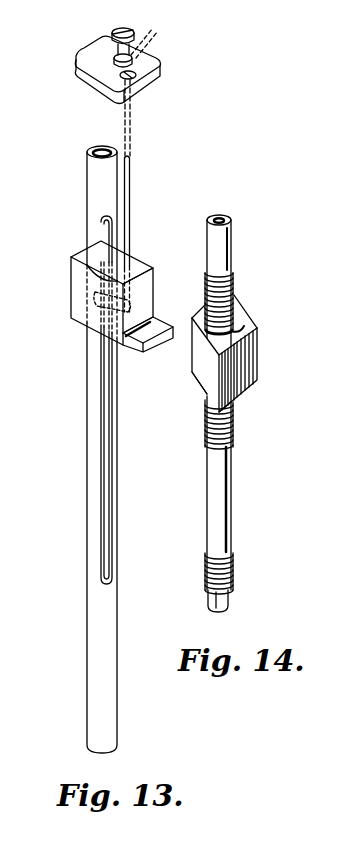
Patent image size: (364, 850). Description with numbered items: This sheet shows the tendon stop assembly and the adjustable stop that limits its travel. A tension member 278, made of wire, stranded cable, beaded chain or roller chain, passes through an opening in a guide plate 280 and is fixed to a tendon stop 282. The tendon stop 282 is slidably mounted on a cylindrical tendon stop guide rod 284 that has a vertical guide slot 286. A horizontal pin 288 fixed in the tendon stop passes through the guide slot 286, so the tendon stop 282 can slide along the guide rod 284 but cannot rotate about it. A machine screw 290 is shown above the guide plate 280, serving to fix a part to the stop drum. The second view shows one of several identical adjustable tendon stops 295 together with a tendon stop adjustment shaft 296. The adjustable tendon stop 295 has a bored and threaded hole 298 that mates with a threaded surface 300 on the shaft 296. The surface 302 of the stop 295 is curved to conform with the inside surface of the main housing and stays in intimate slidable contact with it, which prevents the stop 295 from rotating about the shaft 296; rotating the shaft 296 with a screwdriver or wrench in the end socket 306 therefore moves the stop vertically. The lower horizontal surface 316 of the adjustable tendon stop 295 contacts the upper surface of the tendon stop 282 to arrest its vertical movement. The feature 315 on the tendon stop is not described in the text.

In FIG. 13, the tension member 278 is at (132, 184).
In FIG. 13, the guide plate 280 is at (92, 80).
In FIG. 13, the tendon stop 282 is at (137, 262).
In FIG. 13, the tendon stop guide rod 284 is at (107, 718).
In FIG. 13, the guide slot 286 is at (108, 478).
In FIG. 13, the horizontal pin 288 is at (130, 305).
In FIG. 13, the machine screw 290 is at (134, 30).
In FIG. 14, the adjustable tendon stop 295 is at (245, 320).
In FIG. 14, the tendon stop adjustment shaft 296 is at (214, 489).
In FIG. 14, the bored and threaded hole 298 is at (236, 307).
In FIG. 14, the threaded surface 300 is at (231, 419).
In FIG. 14, the curved surface 302 is at (251, 356).
In FIG. 14, the end socket 306 is at (225, 215).
In FIG. 13, the foot 315 is at (152, 337).
In FIG. 14, the lower horizontal surface 316 is at (196, 378).